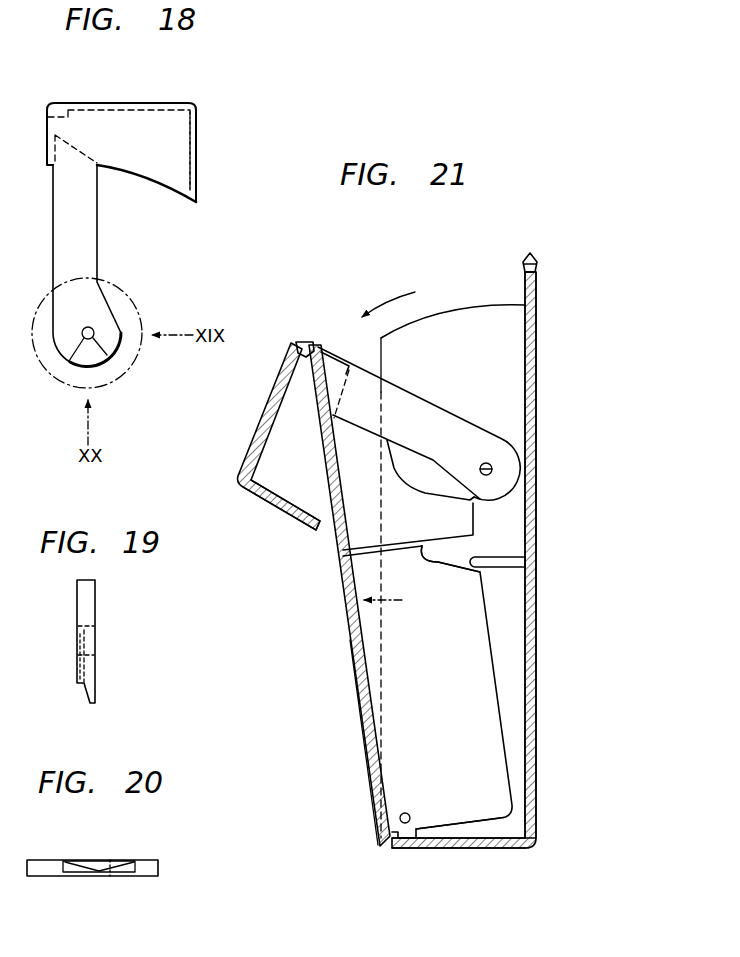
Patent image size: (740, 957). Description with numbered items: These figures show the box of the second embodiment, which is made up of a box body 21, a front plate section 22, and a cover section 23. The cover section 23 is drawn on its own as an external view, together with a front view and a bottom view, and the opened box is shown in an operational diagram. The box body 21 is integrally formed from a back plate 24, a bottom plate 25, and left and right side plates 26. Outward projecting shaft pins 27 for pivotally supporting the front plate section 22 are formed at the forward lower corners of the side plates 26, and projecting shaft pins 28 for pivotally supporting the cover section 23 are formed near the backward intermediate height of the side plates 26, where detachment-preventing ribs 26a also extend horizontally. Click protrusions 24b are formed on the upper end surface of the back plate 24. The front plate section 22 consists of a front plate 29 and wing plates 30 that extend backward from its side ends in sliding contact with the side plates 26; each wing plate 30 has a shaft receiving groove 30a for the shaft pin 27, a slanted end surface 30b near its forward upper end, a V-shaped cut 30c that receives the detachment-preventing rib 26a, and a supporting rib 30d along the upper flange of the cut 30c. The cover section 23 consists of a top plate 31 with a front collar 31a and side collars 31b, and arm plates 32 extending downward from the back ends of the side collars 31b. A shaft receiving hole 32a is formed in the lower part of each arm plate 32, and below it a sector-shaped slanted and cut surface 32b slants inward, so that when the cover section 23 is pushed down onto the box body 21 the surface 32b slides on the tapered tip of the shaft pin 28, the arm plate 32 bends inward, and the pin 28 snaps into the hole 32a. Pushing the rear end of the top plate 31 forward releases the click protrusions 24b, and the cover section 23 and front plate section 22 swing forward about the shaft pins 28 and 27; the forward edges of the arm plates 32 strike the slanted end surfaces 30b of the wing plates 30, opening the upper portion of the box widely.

In FIG. 21, the box body 21 is at (546, 298).
In FIG. 21, the front plate section 22 is at (330, 581).
In FIG. 21, the cover section 23 is at (281, 344).
In FIG. 21, the back plate 24 is at (535, 626).
In FIG. 21, the click protrusion 24b is at (530, 254).
In FIG. 21, the bottom plate 25 is at (458, 849).
In FIG. 21, the side plate 26 is at (475, 316).
In FIG. 21, the detachment-preventing rib 26a is at (492, 562).
In FIG. 21, the shaft pin 27 is at (405, 811).
In FIG. 21, the shaft pin 28 is at (493, 470).
In FIG. 21, the front plate 29 is at (363, 692).
In FIG. 21, the wing plate 30 is at (370, 637).
In FIG. 21, the shaft receiving groove 30a is at (420, 824).
In FIG. 21, the slanted end surface 30b is at (366, 438).
In FIG. 21, the V-shaped cut 30c is at (432, 555).
In FIG. 21, the supporting rib 30d is at (403, 546).
In FIG. 18, the top plate 31 is at (142, 102).
In FIG. 21, the top plate 31 is at (264, 411).
In FIG. 18, the front collar 31a is at (198, 130).
In FIG. 21, the front collar 31a is at (282, 510).
In FIG. 18, the side collar 31b is at (177, 165).
In FIG. 18, the arm plate 32 is at (86, 246).
In FIG. 19, the arm plate 32 is at (90, 597).
In FIG. 20, the arm plate 32 is at (42, 859).
In FIG. 21, the arm plate 32 is at (430, 416).
In FIG. 18, the shaft receiving hole 32a is at (94, 328).
In FIG. 19, the shaft receiving hole 32a is at (98, 650).
In FIG. 20, the shaft receiving hole 32a is at (92, 869).
In FIG. 18, the slanted and cut surface 32b is at (80, 356).
In FIG. 19, the slanted and cut surface 32b is at (79, 667).
In FIG. 20, the slanted and cut surface 32b is at (102, 860).